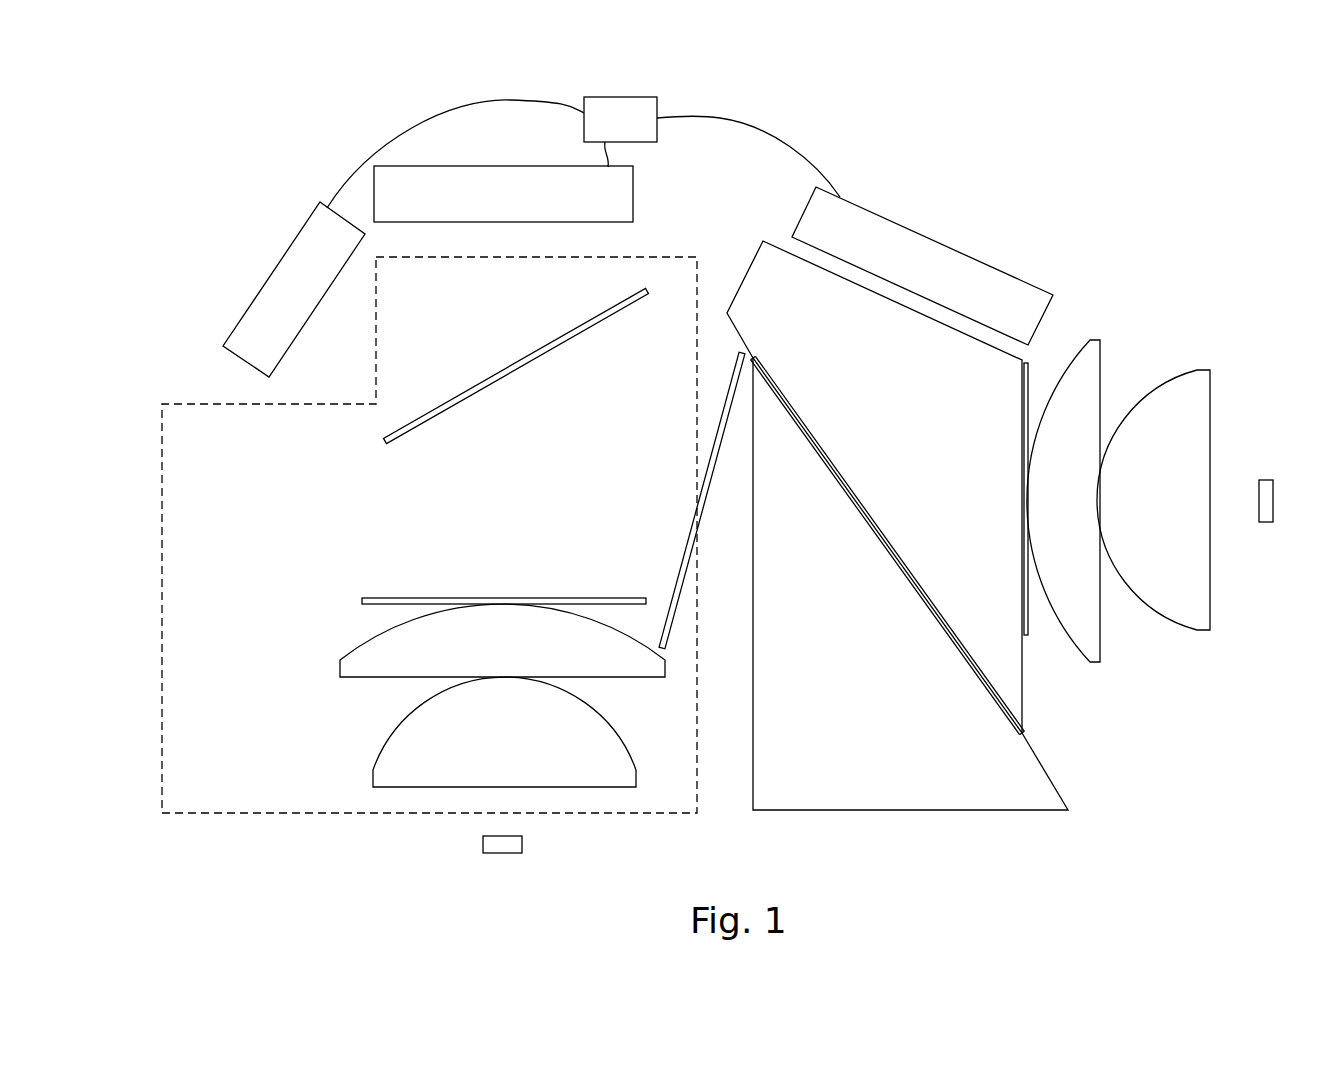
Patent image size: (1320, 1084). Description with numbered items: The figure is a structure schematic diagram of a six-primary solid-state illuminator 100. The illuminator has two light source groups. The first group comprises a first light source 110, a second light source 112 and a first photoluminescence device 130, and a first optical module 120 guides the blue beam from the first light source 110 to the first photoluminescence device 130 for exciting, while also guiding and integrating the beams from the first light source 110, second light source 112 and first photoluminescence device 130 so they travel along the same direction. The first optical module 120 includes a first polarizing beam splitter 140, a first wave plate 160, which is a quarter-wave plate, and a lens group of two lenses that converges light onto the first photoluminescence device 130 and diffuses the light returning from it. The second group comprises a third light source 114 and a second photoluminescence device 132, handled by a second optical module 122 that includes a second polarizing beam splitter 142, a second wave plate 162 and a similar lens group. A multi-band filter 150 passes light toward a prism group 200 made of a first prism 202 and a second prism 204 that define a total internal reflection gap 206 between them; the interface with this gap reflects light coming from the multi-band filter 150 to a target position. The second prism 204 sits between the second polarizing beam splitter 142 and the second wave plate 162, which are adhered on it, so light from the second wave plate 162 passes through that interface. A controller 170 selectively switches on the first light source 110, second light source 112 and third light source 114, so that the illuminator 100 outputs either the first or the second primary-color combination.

The six-primary solid-state illuminator 100 is at (172, 138).
The first light source 110 is at (495, 175).
The second light source 112 is at (273, 282).
The third light source 114 is at (873, 220).
The first optical module 120 is at (205, 815).
The second optical module 122 is at (1192, 216).
The first photoluminescence device 130 is at (483, 840).
The second photoluminescence device 132 is at (1267, 480).
The first polarizing beam splitter 140 is at (383, 441).
The second polarizing beam splitter 142 is at (920, 587).
The multi-band filter 150 is at (690, 543).
The first wave plate 160 is at (363, 600).
The second wave plate 162 is at (1027, 383).
The controller 170 is at (640, 142).
The prism group 200 is at (1205, 713).
The first prism 202 is at (1023, 773).
The second prism 204 is at (1023, 712).
The total internal reflection gap 206 is at (989, 710).